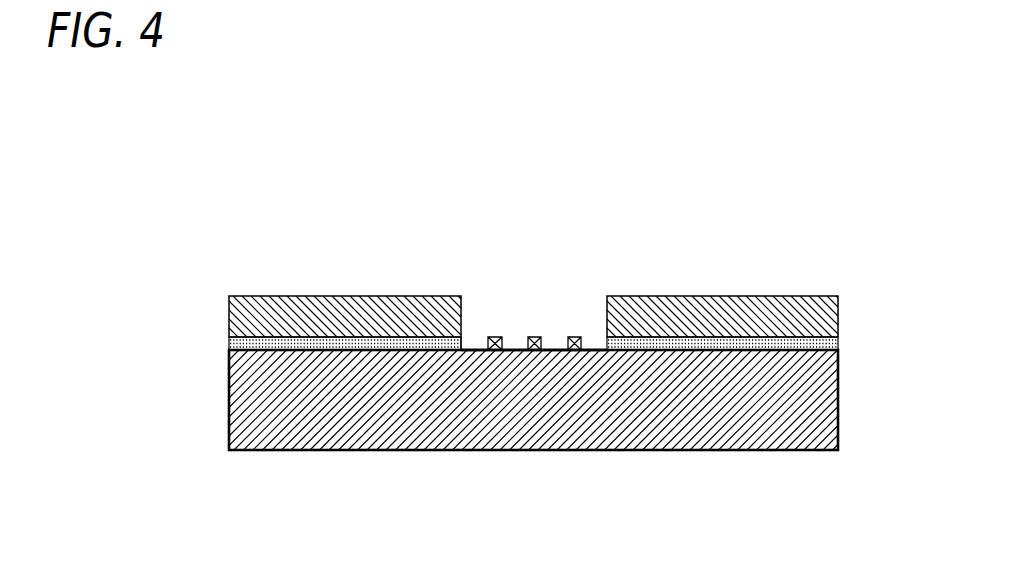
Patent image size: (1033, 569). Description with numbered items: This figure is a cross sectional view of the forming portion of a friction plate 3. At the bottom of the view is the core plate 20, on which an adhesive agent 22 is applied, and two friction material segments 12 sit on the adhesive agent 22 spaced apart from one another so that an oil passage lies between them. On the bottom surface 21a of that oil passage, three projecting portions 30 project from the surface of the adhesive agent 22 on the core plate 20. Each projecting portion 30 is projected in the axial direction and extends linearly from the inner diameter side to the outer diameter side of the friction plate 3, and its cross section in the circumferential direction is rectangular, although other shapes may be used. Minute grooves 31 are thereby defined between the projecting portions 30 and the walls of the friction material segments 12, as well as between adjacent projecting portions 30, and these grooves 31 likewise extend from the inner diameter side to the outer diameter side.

The friction plate 3 is at (623, 237).
The friction material segments 12 is at (325, 318).
The core plate 20 is at (273, 417).
The bottom surface 21a is at (517, 352).
The adhesive agent 22 is at (228, 332).
The projecting portions 30 is at (535, 352).
The grooves 31 is at (475, 343).